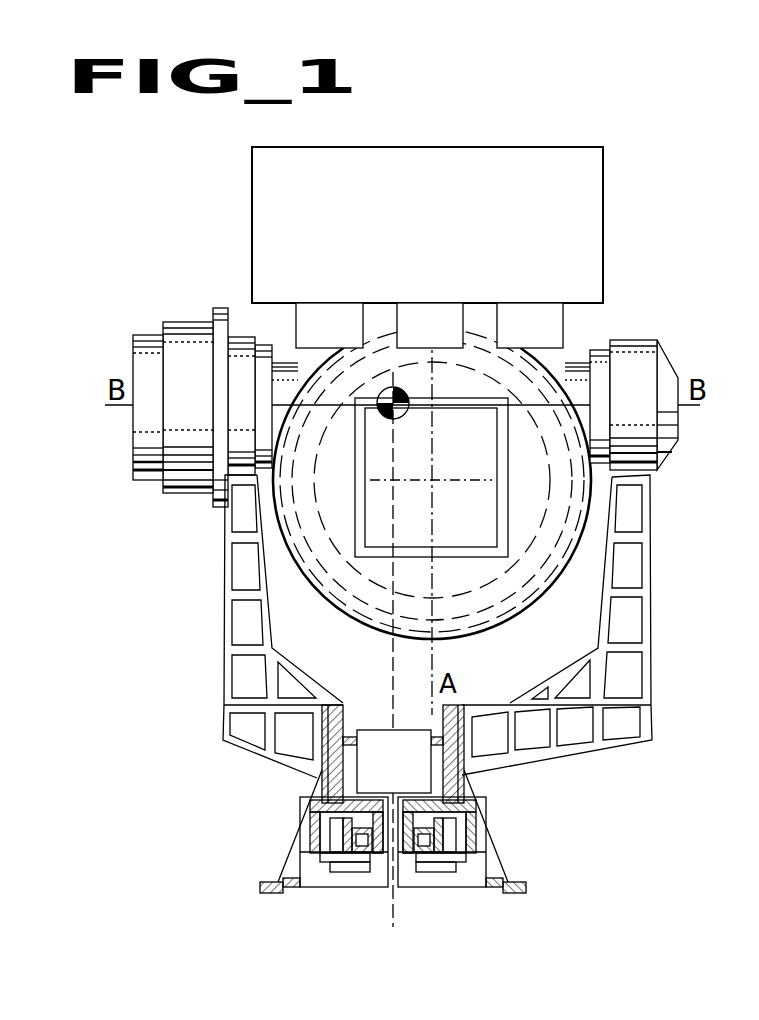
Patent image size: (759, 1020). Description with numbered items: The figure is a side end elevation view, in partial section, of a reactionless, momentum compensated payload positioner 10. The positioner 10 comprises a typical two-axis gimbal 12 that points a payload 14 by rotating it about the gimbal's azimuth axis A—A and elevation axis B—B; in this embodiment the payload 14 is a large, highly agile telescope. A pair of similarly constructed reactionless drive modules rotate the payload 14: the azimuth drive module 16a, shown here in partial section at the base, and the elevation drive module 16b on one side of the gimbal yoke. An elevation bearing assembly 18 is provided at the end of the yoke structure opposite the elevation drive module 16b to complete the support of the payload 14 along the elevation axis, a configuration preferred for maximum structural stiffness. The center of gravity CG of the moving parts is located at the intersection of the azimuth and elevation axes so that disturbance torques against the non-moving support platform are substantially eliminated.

The payload positioner 10 is at (628, 274).
The 2-axis gimbal 12 is at (666, 704).
The payload 14 is at (520, 577).
The azimuth drive module 16a is at (498, 828).
The elevation drive module 16b is at (195, 316).
The elevation bearing assembly 18 is at (632, 336).